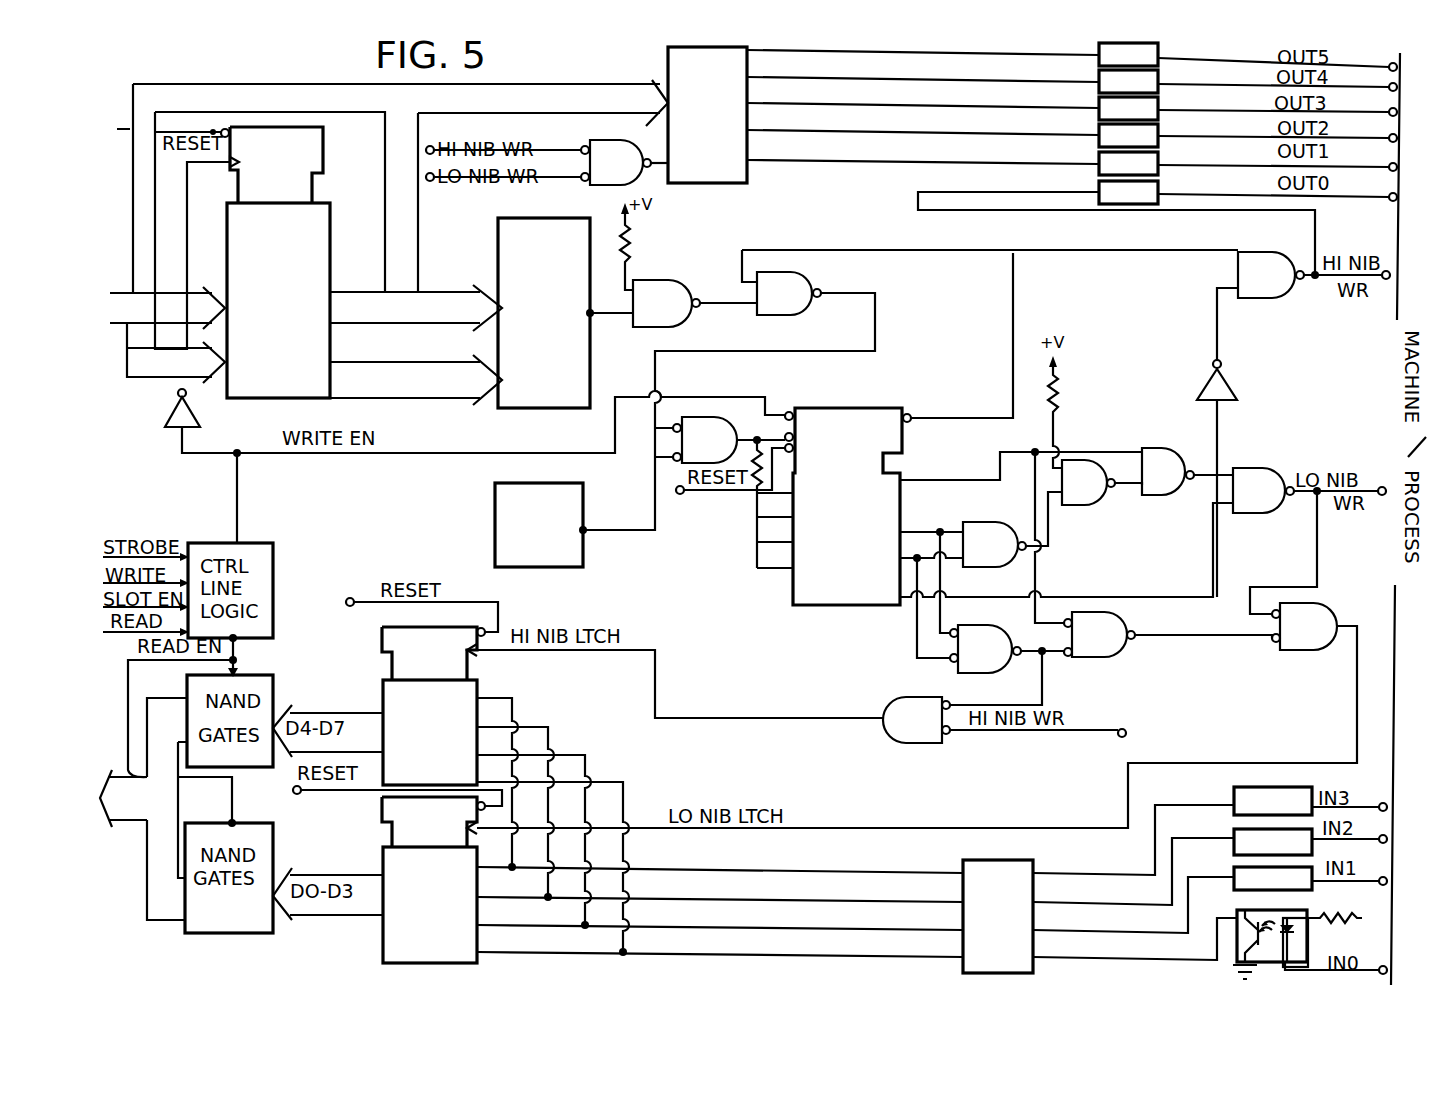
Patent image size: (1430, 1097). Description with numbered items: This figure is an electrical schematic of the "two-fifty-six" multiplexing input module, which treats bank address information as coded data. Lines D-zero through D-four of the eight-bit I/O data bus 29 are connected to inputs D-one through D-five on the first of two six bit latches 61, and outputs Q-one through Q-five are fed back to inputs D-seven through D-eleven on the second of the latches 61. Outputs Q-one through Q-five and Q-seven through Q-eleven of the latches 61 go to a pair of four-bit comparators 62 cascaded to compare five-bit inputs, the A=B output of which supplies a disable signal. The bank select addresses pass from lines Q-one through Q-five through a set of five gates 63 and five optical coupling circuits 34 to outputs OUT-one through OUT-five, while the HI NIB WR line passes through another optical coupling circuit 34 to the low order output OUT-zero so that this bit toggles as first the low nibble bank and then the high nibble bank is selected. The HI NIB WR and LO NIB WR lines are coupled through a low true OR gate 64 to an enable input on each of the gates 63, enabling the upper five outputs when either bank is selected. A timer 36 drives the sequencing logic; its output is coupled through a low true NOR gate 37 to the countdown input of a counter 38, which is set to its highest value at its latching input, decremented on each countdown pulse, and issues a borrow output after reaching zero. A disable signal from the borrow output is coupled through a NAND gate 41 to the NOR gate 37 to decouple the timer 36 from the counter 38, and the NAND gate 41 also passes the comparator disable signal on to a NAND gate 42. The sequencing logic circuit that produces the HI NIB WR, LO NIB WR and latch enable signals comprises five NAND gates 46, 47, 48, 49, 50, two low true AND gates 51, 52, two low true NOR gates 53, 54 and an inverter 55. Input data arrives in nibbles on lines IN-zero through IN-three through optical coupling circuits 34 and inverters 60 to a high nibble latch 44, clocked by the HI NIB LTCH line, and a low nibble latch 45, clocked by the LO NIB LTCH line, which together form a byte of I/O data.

The I/O data bus 29 is at (118, 291).
The optical coupling circuits 34 is at (1160, 173).
The timer 36 is at (585, 562).
The low true NOR gate 37 is at (715, 453).
The counter 38 is at (858, 509).
The NAND gate 41 is at (790, 306).
The NAND gate 42 is at (667, 316).
The high nibble latch 44 is at (483, 690).
The low nibble latch 45 is at (480, 958).
The NAND gate 46 is at (996, 557).
The NAND gate 47 is at (1089, 495).
The NAND gate 48 is at (1168, 484).
The NAND gate 49 is at (1265, 503).
The NAND gate 50 is at (1271, 287).
The low true AND gate 51 is at (991, 661).
The low true AND gate 52 is at (1105, 647).
The low true NOR gate 53 is at (1313, 638).
The low true NOR gate 54 is at (923, 732).
The inverter 55 is at (1225, 383).
The inverters 60 is at (1035, 862).
The six bit latches 61 is at (285, 355).
The four-bit comparators 62 is at (550, 387).
The AND gates 63 is at (712, 166).
The low true OR gate 64 is at (623, 175).